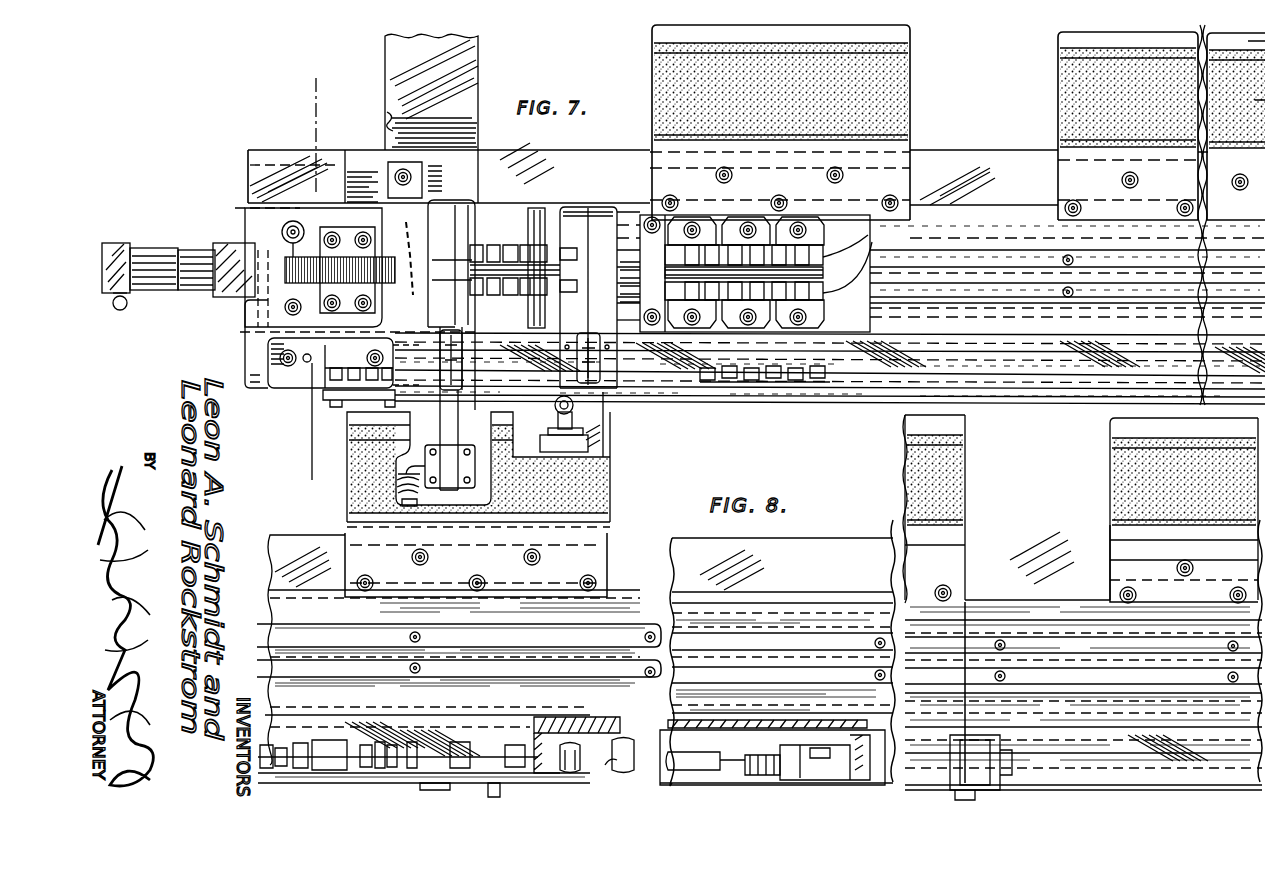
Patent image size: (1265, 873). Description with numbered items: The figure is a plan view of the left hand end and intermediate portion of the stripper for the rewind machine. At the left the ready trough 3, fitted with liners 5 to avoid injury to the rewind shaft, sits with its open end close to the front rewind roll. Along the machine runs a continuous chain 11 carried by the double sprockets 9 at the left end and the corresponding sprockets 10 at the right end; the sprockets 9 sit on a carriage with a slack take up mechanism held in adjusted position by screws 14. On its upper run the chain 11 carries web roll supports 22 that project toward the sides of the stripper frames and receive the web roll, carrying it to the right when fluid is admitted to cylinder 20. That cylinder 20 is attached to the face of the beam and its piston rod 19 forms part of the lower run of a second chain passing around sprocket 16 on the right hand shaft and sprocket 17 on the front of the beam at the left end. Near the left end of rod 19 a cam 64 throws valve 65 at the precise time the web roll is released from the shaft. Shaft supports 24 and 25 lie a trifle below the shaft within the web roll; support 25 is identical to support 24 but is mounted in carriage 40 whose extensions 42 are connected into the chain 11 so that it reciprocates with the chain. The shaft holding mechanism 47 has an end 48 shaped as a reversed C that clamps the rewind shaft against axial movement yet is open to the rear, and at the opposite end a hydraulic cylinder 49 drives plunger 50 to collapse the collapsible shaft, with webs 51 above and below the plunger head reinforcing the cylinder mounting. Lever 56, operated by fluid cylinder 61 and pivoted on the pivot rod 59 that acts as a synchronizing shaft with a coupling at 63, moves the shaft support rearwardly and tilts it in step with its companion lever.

In FIG. 7, the ready trough 3 is at (910, 40).
In FIG. 8, the ready trough 3 is at (350, 502).
In FIG. 7, the liners 5 is at (905, 101).
In FIG. 8, the liners 5 is at (353, 484).
In FIG. 7, the double sprockets 9 is at (493, 246).
In FIG. 7, the sprockets 10 is at (310, 107).
In FIG. 7, the chain 11 is at (780, 261).
In FIG. 7, the screws 14 is at (292, 224).
In FIG. 7, the sprocket 16 is at (763, 390).
In FIG. 7, the sprocket 17 is at (353, 390).
In FIG. 8, the rod 19 is at (621, 772).
In FIG. 8, the cylinder 20 is at (582, 776).
In FIG. 7, the web roll supports 22 is at (818, 230).
In FIG. 7, the shaft support 24 is at (440, 203).
In FIG. 7, the shaft support 25 is at (582, 205).
In FIG. 7, the carriage 40 is at (624, 223).
In FIG. 7, the extensions 42 is at (673, 288).
In FIG. 7, the shaft holding mechanism 47 is at (388, 208).
In FIG. 7, the end 48 is at (406, 249).
In FIG. 7, the hydraulic cylinder 49 is at (152, 265).
In FIG. 7, the plunger 50 is at (262, 240).
In FIG. 7, the webs 51 is at (297, 288).
In FIG. 7, the lever 56 is at (448, 428).
In FIG. 8, the pivot rod 59 is at (838, 752).
In FIG. 7, the fluid cylinder 61 is at (429, 447).
In FIG. 8, the coupling 63 is at (766, 752).
In FIG. 8, the cam 64 is at (432, 784).
In FIG. 7, the valve 65 is at (574, 428).